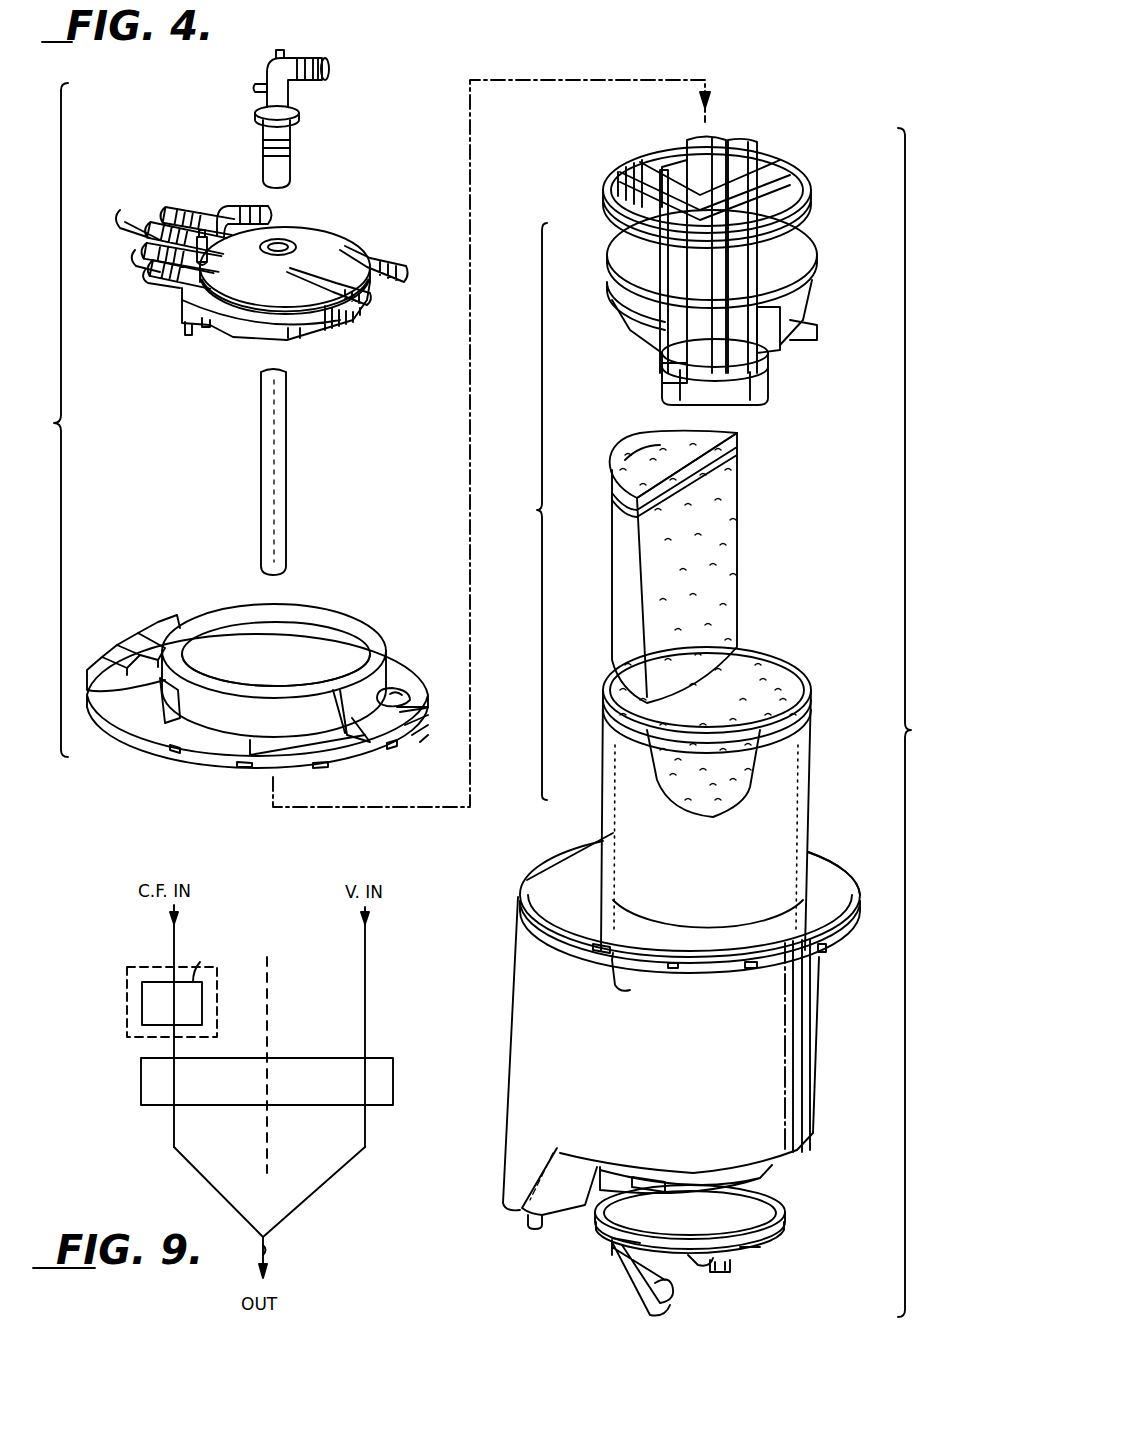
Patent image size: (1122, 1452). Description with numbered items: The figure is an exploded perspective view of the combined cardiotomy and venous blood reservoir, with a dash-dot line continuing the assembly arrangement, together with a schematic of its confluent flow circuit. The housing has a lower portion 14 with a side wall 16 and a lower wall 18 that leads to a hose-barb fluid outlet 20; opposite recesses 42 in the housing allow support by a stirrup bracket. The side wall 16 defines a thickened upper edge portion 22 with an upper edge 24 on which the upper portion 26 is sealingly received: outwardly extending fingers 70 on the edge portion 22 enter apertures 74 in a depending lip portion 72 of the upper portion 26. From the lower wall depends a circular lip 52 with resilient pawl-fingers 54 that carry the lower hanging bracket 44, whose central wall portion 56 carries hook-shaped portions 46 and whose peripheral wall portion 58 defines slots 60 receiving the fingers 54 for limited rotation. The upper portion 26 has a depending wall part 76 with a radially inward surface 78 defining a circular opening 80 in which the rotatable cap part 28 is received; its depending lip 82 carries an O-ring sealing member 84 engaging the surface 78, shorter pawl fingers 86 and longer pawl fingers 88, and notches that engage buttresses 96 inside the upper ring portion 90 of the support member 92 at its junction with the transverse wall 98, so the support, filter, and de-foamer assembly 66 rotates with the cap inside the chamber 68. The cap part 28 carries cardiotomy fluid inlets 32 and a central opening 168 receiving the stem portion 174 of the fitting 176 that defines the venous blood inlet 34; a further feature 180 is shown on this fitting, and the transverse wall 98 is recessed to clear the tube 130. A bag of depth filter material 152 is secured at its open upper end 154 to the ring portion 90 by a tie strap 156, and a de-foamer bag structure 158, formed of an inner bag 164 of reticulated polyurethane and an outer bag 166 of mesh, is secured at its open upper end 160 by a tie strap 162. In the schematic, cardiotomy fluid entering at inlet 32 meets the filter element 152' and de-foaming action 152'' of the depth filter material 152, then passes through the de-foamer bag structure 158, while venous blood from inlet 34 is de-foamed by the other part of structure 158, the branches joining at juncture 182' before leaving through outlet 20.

In FIG. 4, the lower portion 14 is at (822, 1083).
In FIG. 4, the side wall 16 is at (517, 1060).
In FIG. 4, the lower wall 18 is at (593, 1167).
In FIG. 4, the fluid outlet 20 is at (528, 1220).
In FIG. 9, the fluid outlet 20 is at (267, 1252).
In FIG. 4, the upper edge portion 22 is at (550, 935).
In FIG. 4, the upper edge 24 is at (550, 852).
In FIG. 4, the upper portion 26 is at (383, 626).
In FIG. 4, the cap part 28 is at (333, 240).
In FIG. 4, the cardiotomy fluid inlets 32 is at (156, 226).
In FIG. 9, the cardiotomy fluid inlets 32 is at (175, 938).
In FIG. 4, the venous blood inlet 34 is at (306, 64).
In FIG. 9, the venous blood inlet 34 is at (366, 939).
In FIG. 4, the recesses 42 is at (583, 953).
In FIG. 4, the lower hanging bracket 44 is at (791, 1202).
In FIG. 4, the hook-shaped portions 46 is at (637, 1307).
In FIG. 4, the circular lip 52 is at (773, 1165).
In FIG. 4, the pawl-fingers 54 is at (652, 1195).
In FIG. 4, the central wall portion 56 is at (736, 1226).
In FIG. 4, the peripheral wall portion 58 is at (760, 1245).
In FIG. 4, the slots 60 is at (693, 1262).
In FIG. 4, the support, filter, and de-foamer assembly 66 is at (525, 511).
In FIG. 4, the chamber 68 is at (822, 880).
In FIG. 4, the fingers 70 is at (612, 975).
In FIG. 4, the depending lip portion 72 is at (408, 742).
In FIG. 4, the apertures 74 is at (237, 765).
In FIG. 4, the depending wall part 76 is at (333, 633).
In FIG. 4, the radially inwardly disposed surface 78 is at (298, 617).
In FIG. 4, the circular opening 80 is at (225, 648).
In FIG. 4, the depending lip 82 is at (260, 340).
In FIG. 4, the sealing member 84 is at (313, 337).
In FIG. 4, the shorter pawl fingers 86 is at (300, 340).
In FIG. 4, the longer pawl fingers 88 is at (185, 326).
In FIG. 4, the upper ring portion 90 is at (812, 186).
In FIG. 4, the support member 92 is at (818, 290).
In FIG. 4, the buttresses 96 is at (770, 160).
In FIG. 4, the transverse wall 98 is at (757, 137).
In FIG. 9, the transverse wall 98 is at (268, 1013).
In FIG. 4, the tube 130 is at (282, 470).
In FIG. 4, the bag of depth filter material 152 is at (706, 567).
In FIG. 9, the bag of depth filter material 152 is at (125, 1008).
In FIG. 9, the filter element 152' is at (227, 958).
In FIG. 9, the de-foaming action 152'' is at (132, 987).
In FIG. 4, the open upper end 154 is at (660, 453).
In FIG. 4, the tie strap 156 is at (727, 467).
In FIG. 4, the de-foamer bag structure 158 is at (803, 770).
In FIG. 9, the de-foamer bag structure 158 is at (150, 1087).
In FIG. 4, the open upper end 160 is at (760, 660).
In FIG. 4, the tie strap 162 is at (803, 727).
In FIG. 4, the inner bag 164 is at (694, 790).
In FIG. 4, the outer bag 166 is at (638, 905).
In FIG. 4, the central opening 168 is at (283, 240).
In FIG. 4, the stem portion 174 is at (285, 133).
In FIG. 4, the fitting 176 is at (252, 87).
In FIG. 4, the fitting threads 180 is at (267, 155).
In FIG. 9, the juncture 182' is at (307, 1248).